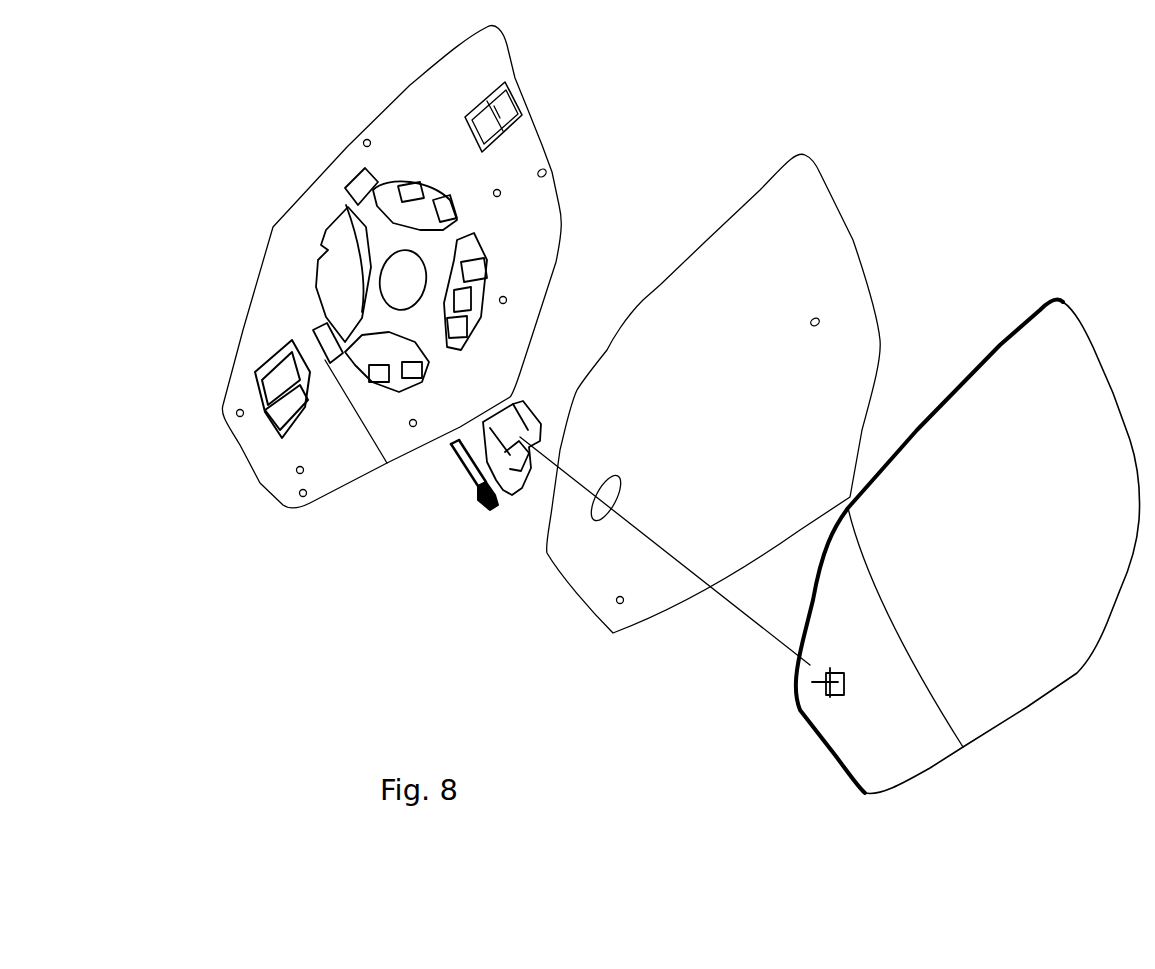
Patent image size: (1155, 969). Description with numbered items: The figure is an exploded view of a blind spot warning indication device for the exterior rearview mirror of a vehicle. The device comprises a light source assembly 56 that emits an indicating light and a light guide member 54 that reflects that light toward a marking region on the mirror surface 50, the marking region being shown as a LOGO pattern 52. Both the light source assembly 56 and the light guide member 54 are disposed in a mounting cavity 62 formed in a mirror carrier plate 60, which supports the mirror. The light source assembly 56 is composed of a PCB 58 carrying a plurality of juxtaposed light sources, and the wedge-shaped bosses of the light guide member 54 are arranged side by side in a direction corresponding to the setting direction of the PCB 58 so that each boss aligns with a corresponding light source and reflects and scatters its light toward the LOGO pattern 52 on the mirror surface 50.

The mirror surface 50 is at (968, 460).
The LOGO pattern 52 is at (830, 697).
The light guide member 54 is at (524, 408).
The light source assembly 56 is at (457, 458).
The PCB 58 is at (462, 460).
The mirror carrier plate 60 is at (347, 173).
The mounting cavity 62 is at (307, 340).